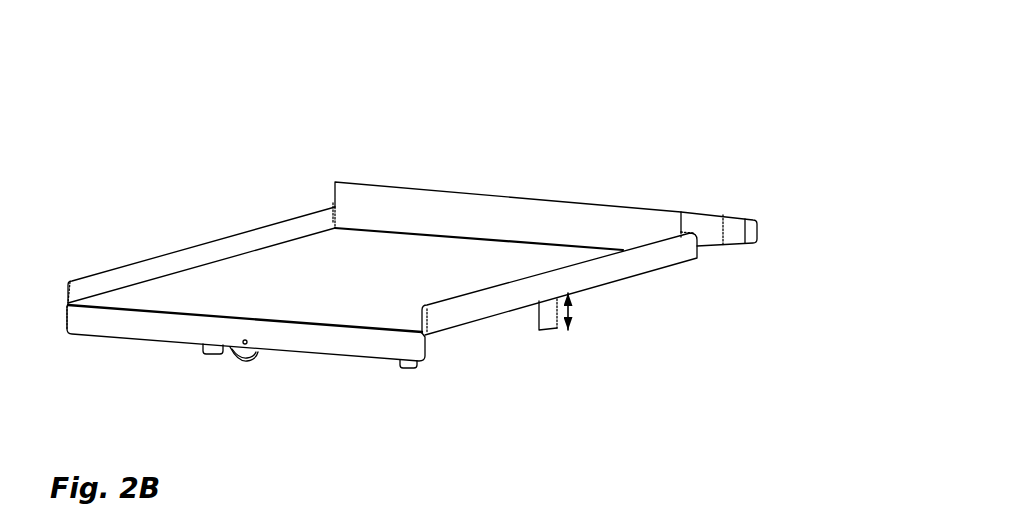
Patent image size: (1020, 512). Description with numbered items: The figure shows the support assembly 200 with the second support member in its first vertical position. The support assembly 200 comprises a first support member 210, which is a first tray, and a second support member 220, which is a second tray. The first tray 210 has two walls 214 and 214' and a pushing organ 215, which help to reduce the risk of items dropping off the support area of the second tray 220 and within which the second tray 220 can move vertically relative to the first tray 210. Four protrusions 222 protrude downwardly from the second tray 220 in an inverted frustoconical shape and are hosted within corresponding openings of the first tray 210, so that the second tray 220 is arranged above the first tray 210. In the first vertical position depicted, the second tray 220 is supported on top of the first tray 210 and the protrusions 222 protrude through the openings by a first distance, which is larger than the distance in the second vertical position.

The support assembly 200 is at (548, 132).
The first support member 210 is at (135, 333).
The wall 214 is at (201, 251).
The wall 214' is at (560, 284).
The pushing organ 215 is at (430, 203).
The second support member 220 is at (268, 263).
The protrusion 222 is at (543, 322).